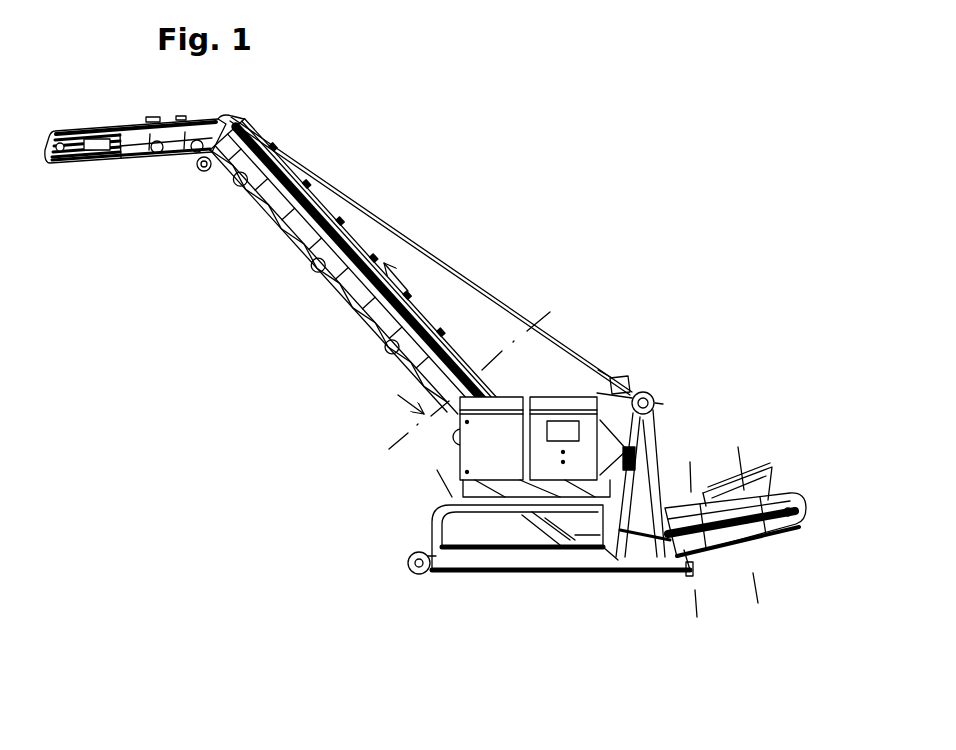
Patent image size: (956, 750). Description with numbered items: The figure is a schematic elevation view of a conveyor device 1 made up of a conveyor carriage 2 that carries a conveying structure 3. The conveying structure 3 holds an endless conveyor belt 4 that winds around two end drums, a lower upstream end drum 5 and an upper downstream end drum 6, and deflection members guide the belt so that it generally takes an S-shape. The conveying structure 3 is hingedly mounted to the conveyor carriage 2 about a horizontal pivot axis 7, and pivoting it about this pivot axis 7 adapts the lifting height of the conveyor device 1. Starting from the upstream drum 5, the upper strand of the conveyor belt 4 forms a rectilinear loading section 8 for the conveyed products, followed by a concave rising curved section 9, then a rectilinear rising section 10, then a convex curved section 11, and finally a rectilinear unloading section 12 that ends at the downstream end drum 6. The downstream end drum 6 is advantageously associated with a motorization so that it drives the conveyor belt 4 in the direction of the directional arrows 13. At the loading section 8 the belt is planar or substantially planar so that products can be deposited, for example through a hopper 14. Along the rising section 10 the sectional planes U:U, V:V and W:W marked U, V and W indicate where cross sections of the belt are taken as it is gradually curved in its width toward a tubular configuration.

The conveyor device 1 is at (430, 209).
The conveyor carriage 2 is at (536, 578).
The conveying structure 3 is at (247, 228).
The conveyor belt 4 is at (295, 250).
The upstream end drum 5 is at (781, 547).
The downstream end drum 6 is at (62, 126).
The pivot axis 7 is at (654, 386).
The loading section 8 is at (701, 470).
The concave rising curved section 9 is at (643, 560).
The rectilinear rising section 10 is at (457, 352).
The convex curved section 11 is at (238, 111).
The unloading section 12 is at (141, 114).
The directional arrows 13 is at (409, 284).
The hopper 14 is at (781, 465).
The sectional plane W: W is at (443, 381).
The sectional plane V: V is at (683, 546).
The sectional plane U: U is at (746, 531).